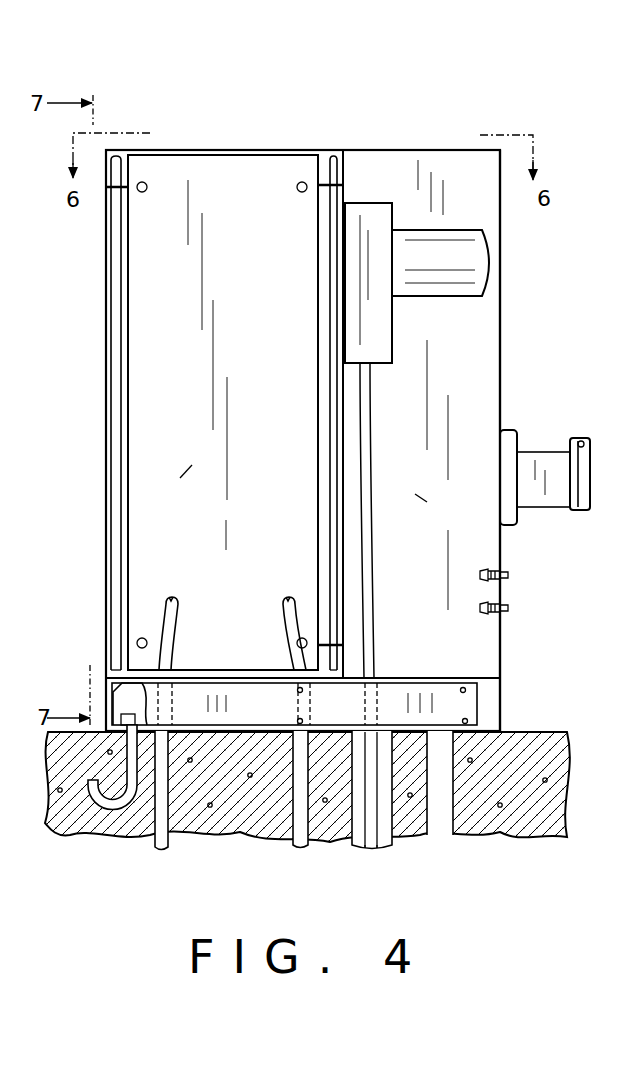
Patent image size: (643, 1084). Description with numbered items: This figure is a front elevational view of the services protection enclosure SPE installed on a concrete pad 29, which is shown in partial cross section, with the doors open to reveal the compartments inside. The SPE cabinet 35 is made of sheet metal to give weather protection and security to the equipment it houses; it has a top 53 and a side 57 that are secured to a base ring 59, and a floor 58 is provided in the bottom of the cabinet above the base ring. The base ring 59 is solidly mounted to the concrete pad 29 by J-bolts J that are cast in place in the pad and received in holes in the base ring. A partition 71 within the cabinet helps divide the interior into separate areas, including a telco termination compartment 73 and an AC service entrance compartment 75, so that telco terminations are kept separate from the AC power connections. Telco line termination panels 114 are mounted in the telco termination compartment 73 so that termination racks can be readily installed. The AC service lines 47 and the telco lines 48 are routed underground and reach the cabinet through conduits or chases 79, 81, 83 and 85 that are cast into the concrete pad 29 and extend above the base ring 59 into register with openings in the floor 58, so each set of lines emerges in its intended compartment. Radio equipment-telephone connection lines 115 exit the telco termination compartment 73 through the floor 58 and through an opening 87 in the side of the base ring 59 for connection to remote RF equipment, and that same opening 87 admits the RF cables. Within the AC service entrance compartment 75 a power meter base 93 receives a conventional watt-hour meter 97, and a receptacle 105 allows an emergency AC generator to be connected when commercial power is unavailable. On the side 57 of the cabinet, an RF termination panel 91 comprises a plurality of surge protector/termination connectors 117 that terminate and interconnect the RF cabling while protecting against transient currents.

The concrete pad 29 is at (503, 808).
The SPE cabinet 35 is at (505, 283).
The AC service lines 47 is at (376, 603).
The telco lines 48 is at (278, 625).
The top 53 is at (360, 150).
The side 57 is at (500, 373).
The floor 58 is at (440, 678).
The base ring 59 is at (500, 710).
The partition 71 is at (345, 420).
The telco termination compartment 73 is at (178, 464).
The AC service entrance compartment 75 is at (426, 506).
The conduit or chase 79 is at (150, 802).
The conduit or chase 81 is at (290, 805).
The conduit or chase 83 is at (383, 805).
The conduit or chase 85 is at (457, 805).
The opening 87 is at (125, 678).
The RF termination panel 91 is at (509, 576).
The power meter base 93 is at (370, 203).
The watt-hour meter 97 is at (445, 297).
The receptacle 105 is at (530, 452).
The telco line termination panels 114 is at (317, 343).
The radio equipment-telephone connection lines 115 is at (178, 618).
The surge protector/termination connector 117 is at (508, 608).
The J-bolt J is at (108, 806).
The services protection enclosure SPE is at (340, 113).